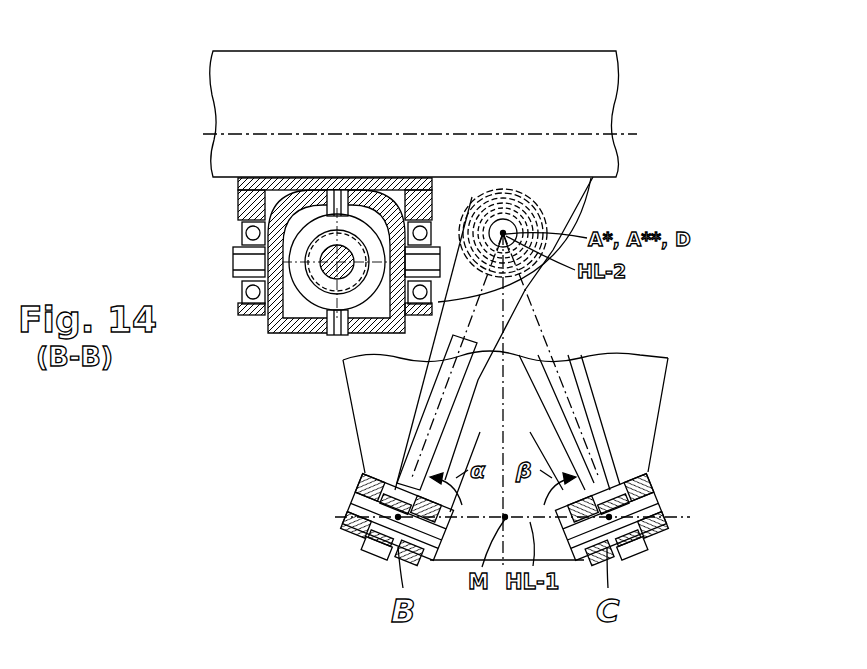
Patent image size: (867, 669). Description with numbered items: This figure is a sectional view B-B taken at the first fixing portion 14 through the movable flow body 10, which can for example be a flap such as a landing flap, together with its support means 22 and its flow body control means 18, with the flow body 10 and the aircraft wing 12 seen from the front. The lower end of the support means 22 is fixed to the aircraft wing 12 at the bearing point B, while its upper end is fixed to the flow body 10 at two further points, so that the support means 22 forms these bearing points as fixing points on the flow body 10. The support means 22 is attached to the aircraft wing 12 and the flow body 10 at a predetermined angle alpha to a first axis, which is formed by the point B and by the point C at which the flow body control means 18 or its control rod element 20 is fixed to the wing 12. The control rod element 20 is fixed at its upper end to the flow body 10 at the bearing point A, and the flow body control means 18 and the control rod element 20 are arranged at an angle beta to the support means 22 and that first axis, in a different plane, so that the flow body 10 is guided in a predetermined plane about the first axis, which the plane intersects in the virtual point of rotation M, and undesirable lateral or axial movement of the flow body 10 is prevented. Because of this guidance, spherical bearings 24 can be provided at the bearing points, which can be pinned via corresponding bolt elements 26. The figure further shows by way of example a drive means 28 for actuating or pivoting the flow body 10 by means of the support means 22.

The flow body 10 is at (480, 76).
The aircraft wing 12 is at (630, 413).
The first fixing portion 14 is at (350, 562).
The flow body control means 18 is at (601, 366).
The control rod element 20 is at (578, 367).
The support means 22 is at (420, 405).
The spherical bearing 24 is at (562, 200).
The bolt element 26 is at (365, 497).
The drive means 28 is at (300, 288).